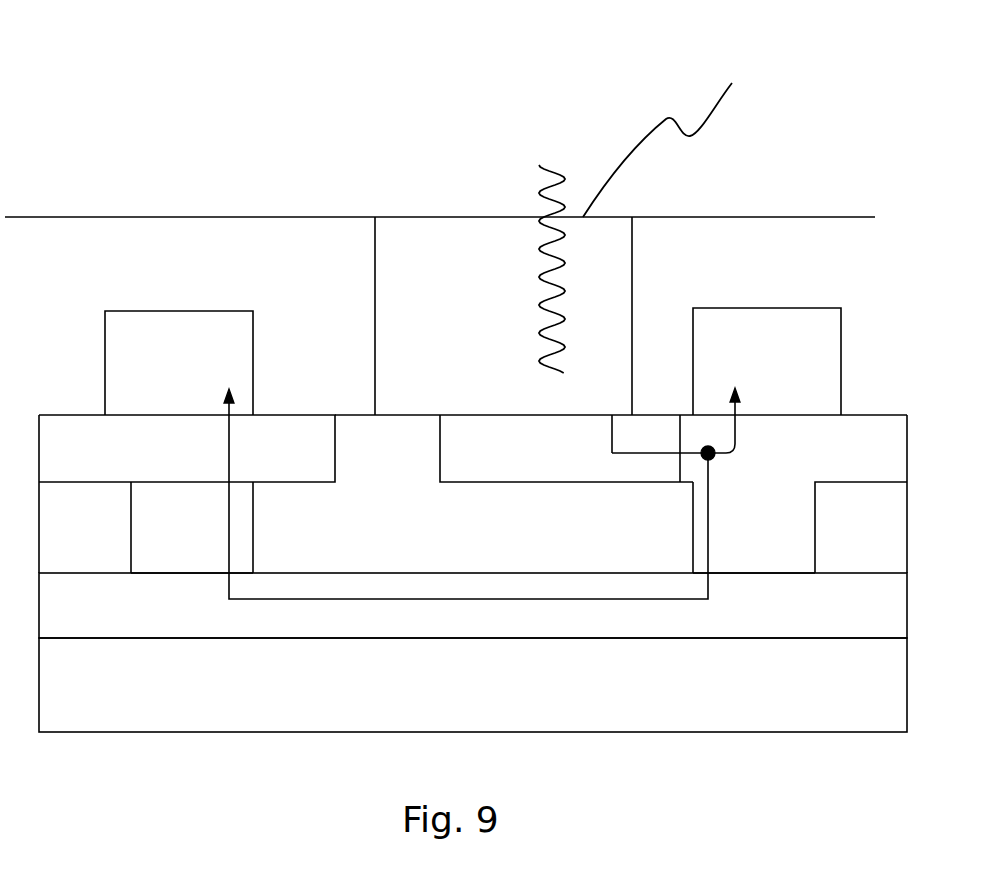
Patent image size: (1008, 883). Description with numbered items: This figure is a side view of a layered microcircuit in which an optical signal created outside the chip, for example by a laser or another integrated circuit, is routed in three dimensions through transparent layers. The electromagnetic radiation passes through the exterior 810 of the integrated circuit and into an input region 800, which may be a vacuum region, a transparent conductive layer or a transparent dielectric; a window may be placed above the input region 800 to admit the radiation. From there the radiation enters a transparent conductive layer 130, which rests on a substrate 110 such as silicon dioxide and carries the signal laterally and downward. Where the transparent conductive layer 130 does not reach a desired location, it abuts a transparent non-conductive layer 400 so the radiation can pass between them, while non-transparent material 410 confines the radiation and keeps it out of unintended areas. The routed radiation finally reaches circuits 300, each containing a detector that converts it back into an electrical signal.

The substrate 110 is at (473, 685).
The transparent conductive layer 130 is at (473, 526).
The circuit 300 is at (473, 453).
The transparent non-conductive layer 400 is at (473, 540).
The non-transparent material 410 is at (481, 527).
The input region 800 is at (503, 290).
The exterior of the integrated circuit 810 is at (680, 111).